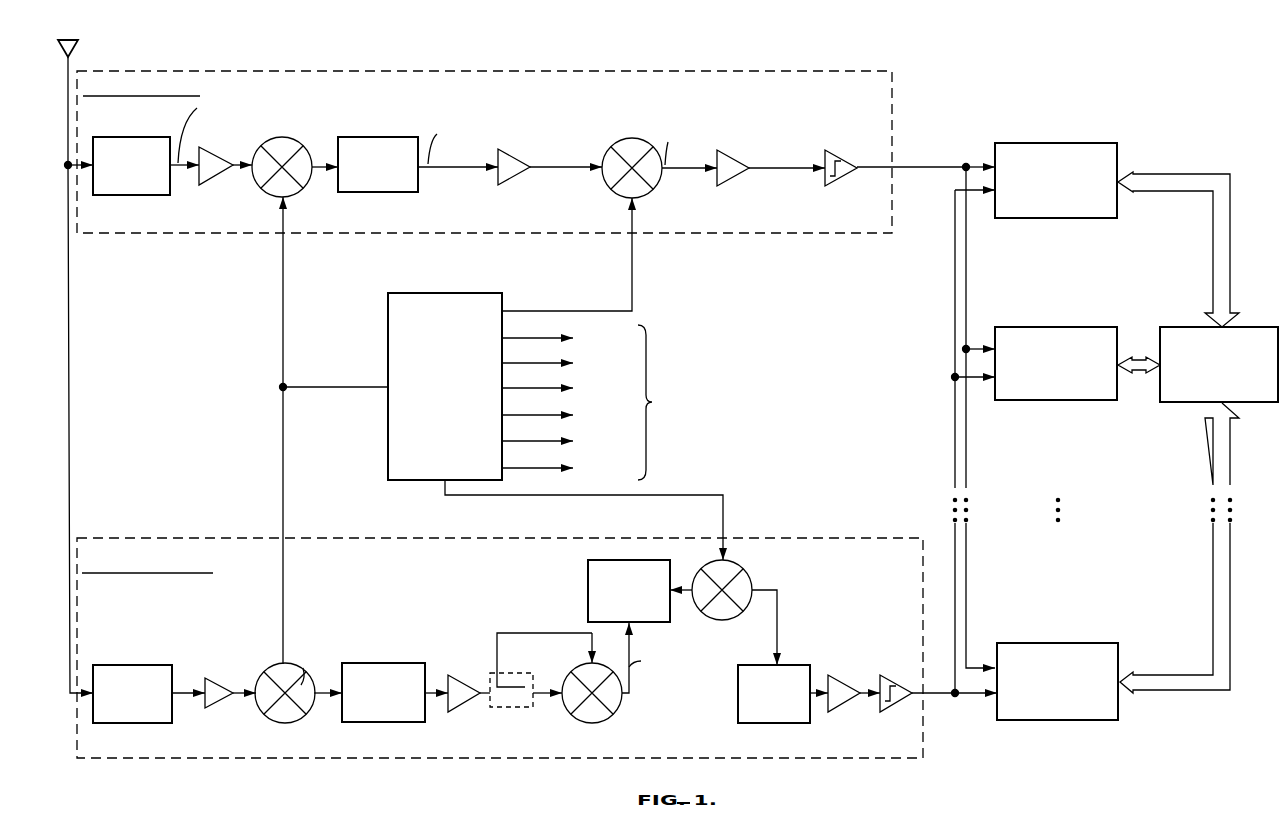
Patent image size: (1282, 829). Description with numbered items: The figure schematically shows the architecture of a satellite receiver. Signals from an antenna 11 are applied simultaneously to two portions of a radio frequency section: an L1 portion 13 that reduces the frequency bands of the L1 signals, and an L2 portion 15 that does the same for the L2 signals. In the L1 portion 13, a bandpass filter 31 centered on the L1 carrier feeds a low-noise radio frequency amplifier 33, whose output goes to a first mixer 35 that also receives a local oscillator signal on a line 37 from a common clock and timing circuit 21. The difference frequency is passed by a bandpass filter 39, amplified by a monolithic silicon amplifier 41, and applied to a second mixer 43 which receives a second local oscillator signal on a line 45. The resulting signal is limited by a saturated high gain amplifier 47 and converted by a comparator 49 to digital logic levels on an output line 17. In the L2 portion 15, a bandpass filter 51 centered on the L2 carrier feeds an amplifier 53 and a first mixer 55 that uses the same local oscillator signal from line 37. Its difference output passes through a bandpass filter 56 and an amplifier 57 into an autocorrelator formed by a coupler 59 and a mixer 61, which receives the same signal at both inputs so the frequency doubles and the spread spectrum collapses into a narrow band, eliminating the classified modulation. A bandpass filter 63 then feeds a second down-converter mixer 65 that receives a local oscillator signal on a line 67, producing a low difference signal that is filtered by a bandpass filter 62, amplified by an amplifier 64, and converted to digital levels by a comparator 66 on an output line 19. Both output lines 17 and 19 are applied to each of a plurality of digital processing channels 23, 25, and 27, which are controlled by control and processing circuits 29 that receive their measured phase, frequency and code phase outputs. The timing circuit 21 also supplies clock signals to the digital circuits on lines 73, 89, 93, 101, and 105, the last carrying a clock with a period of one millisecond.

The antenna 11 is at (79, 42).
The L1 radio frequency section portion 13 is at (228, 236).
The L2 radio frequency section portion 15 is at (268, 533).
The output line of L1 portion 17 is at (897, 168).
The output line of L2 portion 19 is at (930, 693).
The clock and timing circuits 21 is at (461, 293).
The digital processing channel 23 is at (1088, 143).
The digital processing channel 25 is at (1090, 327).
The digital processing channel 27 is at (1090, 643).
The control and processing circuits 29 is at (1243, 327).
The bandpass filter 31 is at (170, 189).
The radio frequency amplifier 33 is at (211, 151).
The first mixer 35 is at (290, 141).
The local oscillator line 37 is at (294, 264).
The bandpass filter 39 is at (418, 185).
The monolithic silicon amplifier 41 is at (510, 151).
The second mixer 43 is at (624, 138).
The local oscillator line 45 is at (632, 265).
The high gain amplifier 47 is at (732, 152).
The comparator 49 is at (843, 153).
The bandpass filter 51 is at (172, 668).
The amplifier 53 is at (219, 681).
The first mixer 55 is at (296, 719).
The bandpass filter 56 is at (398, 663).
The amplifier 57 is at (461, 664).
The coupler 59 is at (505, 673).
The mixer 61 is at (574, 668).
The bandpass filter 62 is at (790, 665).
The bandpass filter 63 is at (677, 547).
The amplifier 64 is at (840, 678).
The second down-converter mixer 65 is at (748, 556).
The comparator 66 is at (892, 678).
The local oscillator line 67 is at (724, 511).
The timing circuit output line 73 is at (510, 338).
The clock line 89 is at (510, 415).
The clock line 93 is at (510, 388).
The clock line 101 is at (510, 441).
The clock line 105 is at (510, 468).